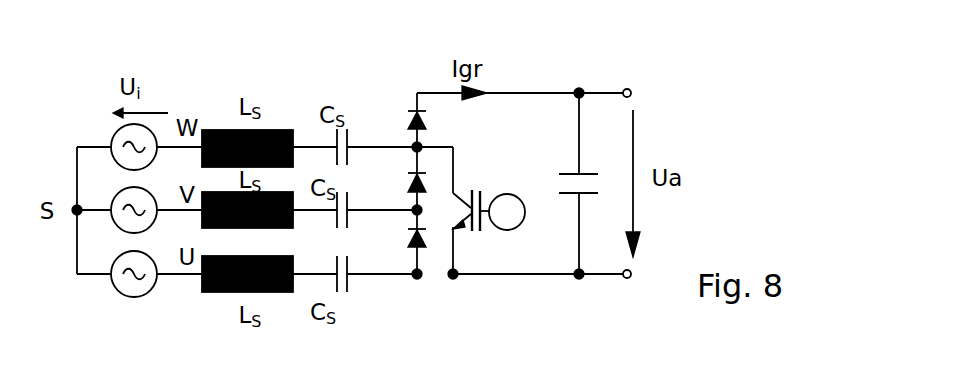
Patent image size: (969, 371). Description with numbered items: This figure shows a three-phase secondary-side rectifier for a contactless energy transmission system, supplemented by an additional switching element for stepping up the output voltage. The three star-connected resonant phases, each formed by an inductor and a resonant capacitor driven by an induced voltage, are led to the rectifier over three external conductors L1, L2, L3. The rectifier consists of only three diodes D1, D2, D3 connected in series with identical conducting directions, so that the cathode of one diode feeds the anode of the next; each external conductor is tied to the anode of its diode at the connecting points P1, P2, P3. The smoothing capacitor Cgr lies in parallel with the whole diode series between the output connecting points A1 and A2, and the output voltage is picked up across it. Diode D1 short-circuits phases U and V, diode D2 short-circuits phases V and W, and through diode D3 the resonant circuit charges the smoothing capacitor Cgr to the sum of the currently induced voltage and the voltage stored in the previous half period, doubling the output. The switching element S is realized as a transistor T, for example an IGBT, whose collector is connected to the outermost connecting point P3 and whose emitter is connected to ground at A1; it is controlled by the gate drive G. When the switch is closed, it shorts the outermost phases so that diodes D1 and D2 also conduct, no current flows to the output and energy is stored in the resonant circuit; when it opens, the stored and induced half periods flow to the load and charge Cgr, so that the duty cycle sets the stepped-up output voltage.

The external conductor L1 is at (393, 278).
The external conductor L2 is at (373, 212).
The external conductor L3 is at (363, 145).
The connecting point P1 is at (425, 278).
The connecting point P2 is at (424, 211).
The connecting point P3 is at (424, 146).
The connecting point A1 is at (581, 281).
The connecting point A2 is at (582, 88).
The switching element S is at (471, 242).
The transistor T is at (453, 213).
The gate drive G is at (507, 212).
The diode D1 is at (399, 250).
The diode D2 is at (399, 189).
The diode D3 is at (399, 127).
The smoothing capacitor Cgr is at (557, 183).